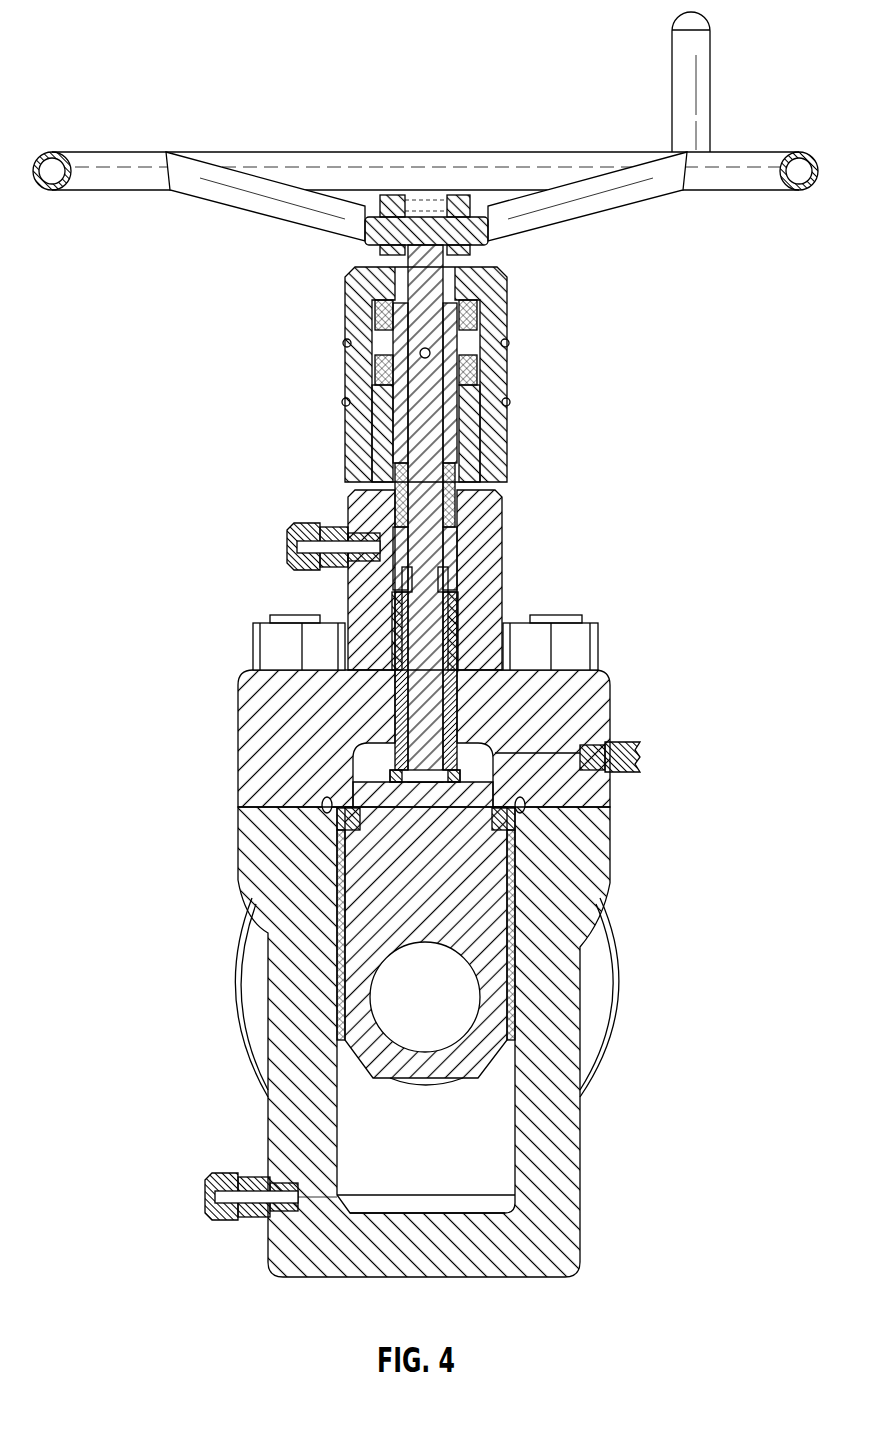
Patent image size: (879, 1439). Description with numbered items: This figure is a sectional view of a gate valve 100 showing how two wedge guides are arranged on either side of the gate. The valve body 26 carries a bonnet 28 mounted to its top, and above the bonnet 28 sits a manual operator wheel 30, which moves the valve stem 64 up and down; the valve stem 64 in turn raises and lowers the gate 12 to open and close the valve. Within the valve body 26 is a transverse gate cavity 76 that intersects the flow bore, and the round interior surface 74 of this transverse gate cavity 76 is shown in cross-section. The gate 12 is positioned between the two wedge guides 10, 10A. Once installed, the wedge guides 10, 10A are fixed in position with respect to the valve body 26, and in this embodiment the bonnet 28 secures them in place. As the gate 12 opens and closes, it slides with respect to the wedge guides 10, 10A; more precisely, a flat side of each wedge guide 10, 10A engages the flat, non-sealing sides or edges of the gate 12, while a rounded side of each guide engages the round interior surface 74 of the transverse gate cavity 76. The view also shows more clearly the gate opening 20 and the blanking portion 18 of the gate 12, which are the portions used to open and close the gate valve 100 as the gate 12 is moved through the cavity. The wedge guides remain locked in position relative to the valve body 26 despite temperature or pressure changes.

The gate valve 100 is at (136, 36).
The manual operator wheel 30 is at (755, 160).
The bonnet 28 is at (497, 528).
The valve stem 64 is at (422, 452).
The gate 12 is at (373, 797).
The blanking portion 18 is at (513, 887).
The valve body 26 is at (550, 1167).
The wedge guide 10A is at (443, 907).
The wedge guide 10 is at (340, 975).
The gate opening 20 is at (343, 1027).
The transverse gate cavity 76 is at (410, 1180).
The interior surface 74 is at (513, 1148).